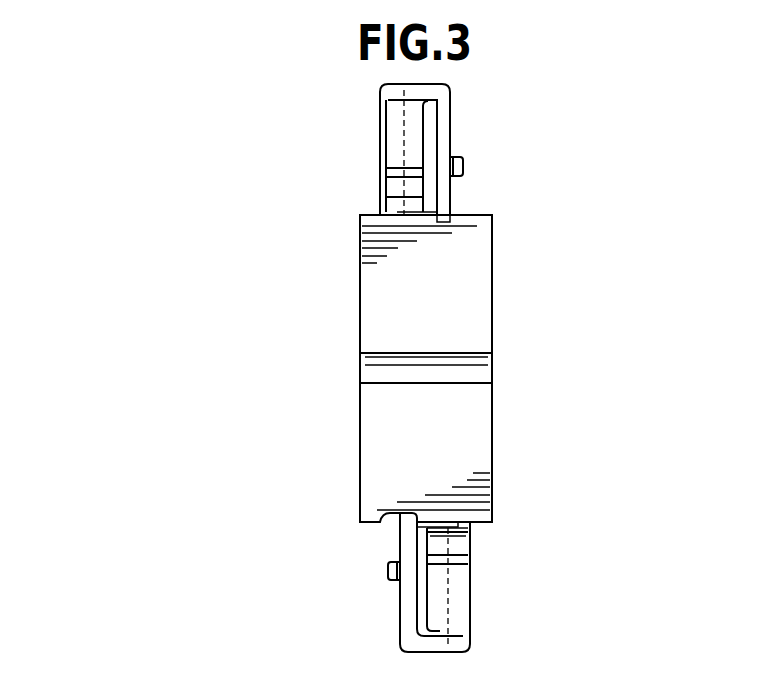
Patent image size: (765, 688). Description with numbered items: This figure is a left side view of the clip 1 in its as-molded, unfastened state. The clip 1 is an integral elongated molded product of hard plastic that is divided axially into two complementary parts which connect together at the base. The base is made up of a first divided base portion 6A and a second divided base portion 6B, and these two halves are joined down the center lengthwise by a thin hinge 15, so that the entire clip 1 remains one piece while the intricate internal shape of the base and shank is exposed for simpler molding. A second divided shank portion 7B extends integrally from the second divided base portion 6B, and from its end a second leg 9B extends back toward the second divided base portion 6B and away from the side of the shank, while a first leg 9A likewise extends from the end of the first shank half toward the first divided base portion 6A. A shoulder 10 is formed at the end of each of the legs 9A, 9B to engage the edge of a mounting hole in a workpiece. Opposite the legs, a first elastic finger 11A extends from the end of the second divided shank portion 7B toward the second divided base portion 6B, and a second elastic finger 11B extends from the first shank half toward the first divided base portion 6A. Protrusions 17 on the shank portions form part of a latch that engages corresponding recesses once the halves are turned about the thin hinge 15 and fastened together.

The clip 1 is at (600, 206).
The first divided base portion 6A is at (473, 294).
The second divided base portion 6B is at (468, 435).
The thin hinge 15 is at (473, 377).
The second elastic finger 11B is at (390, 127).
The first elastic finger 11A is at (457, 607).
The first leg 9A is at (395, 153).
The second leg 9B is at (442, 580).
The shoulder 10 is at (397, 187).
The protrusion 17 is at (464, 168).
The second divided shank portion 7B is at (425, 548).